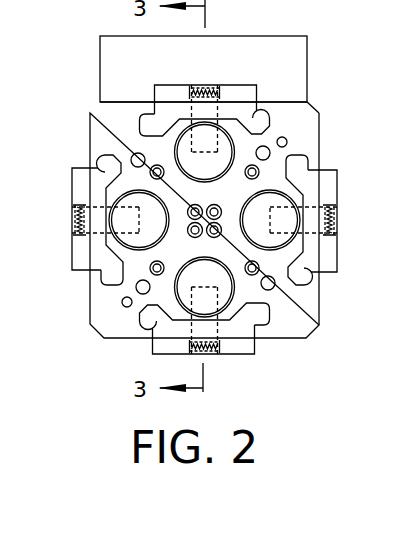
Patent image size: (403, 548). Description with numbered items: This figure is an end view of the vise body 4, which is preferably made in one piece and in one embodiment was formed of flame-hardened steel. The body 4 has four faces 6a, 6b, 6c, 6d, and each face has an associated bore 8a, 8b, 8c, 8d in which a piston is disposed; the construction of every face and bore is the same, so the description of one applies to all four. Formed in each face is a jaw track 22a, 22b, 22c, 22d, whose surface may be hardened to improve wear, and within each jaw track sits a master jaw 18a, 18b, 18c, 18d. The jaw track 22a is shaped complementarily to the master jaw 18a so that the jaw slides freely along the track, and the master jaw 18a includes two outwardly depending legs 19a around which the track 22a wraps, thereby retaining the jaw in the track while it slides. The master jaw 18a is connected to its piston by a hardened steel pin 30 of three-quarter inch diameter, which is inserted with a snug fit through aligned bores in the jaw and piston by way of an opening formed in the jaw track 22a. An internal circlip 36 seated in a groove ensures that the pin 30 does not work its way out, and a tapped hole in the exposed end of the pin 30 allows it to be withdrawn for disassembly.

The body 4 is at (98, 103).
The outwardly depending legs 19a is at (320, 130).
The pin 30 is at (233, 100).
The internal circlip 36 is at (200, 88).
The bore 8a is at (225, 115).
The bore 8b is at (116, 243).
The bore 8c is at (172, 312).
The bore 8d is at (322, 245).
The face 6a is at (268, 123).
The face 6b is at (97, 154).
The face 6c is at (290, 340).
The face 6d is at (320, 311).
The jaw track 22a is at (156, 101).
The jaw track 22b is at (96, 180).
The jaw track 22c is at (240, 345).
The jaw track 22d is at (338, 190).
The master jaw 18a is at (188, 96).
The master jaw 18b is at (84, 198).
The master jaw 18c is at (235, 347).
The master jaw 18d is at (322, 262).